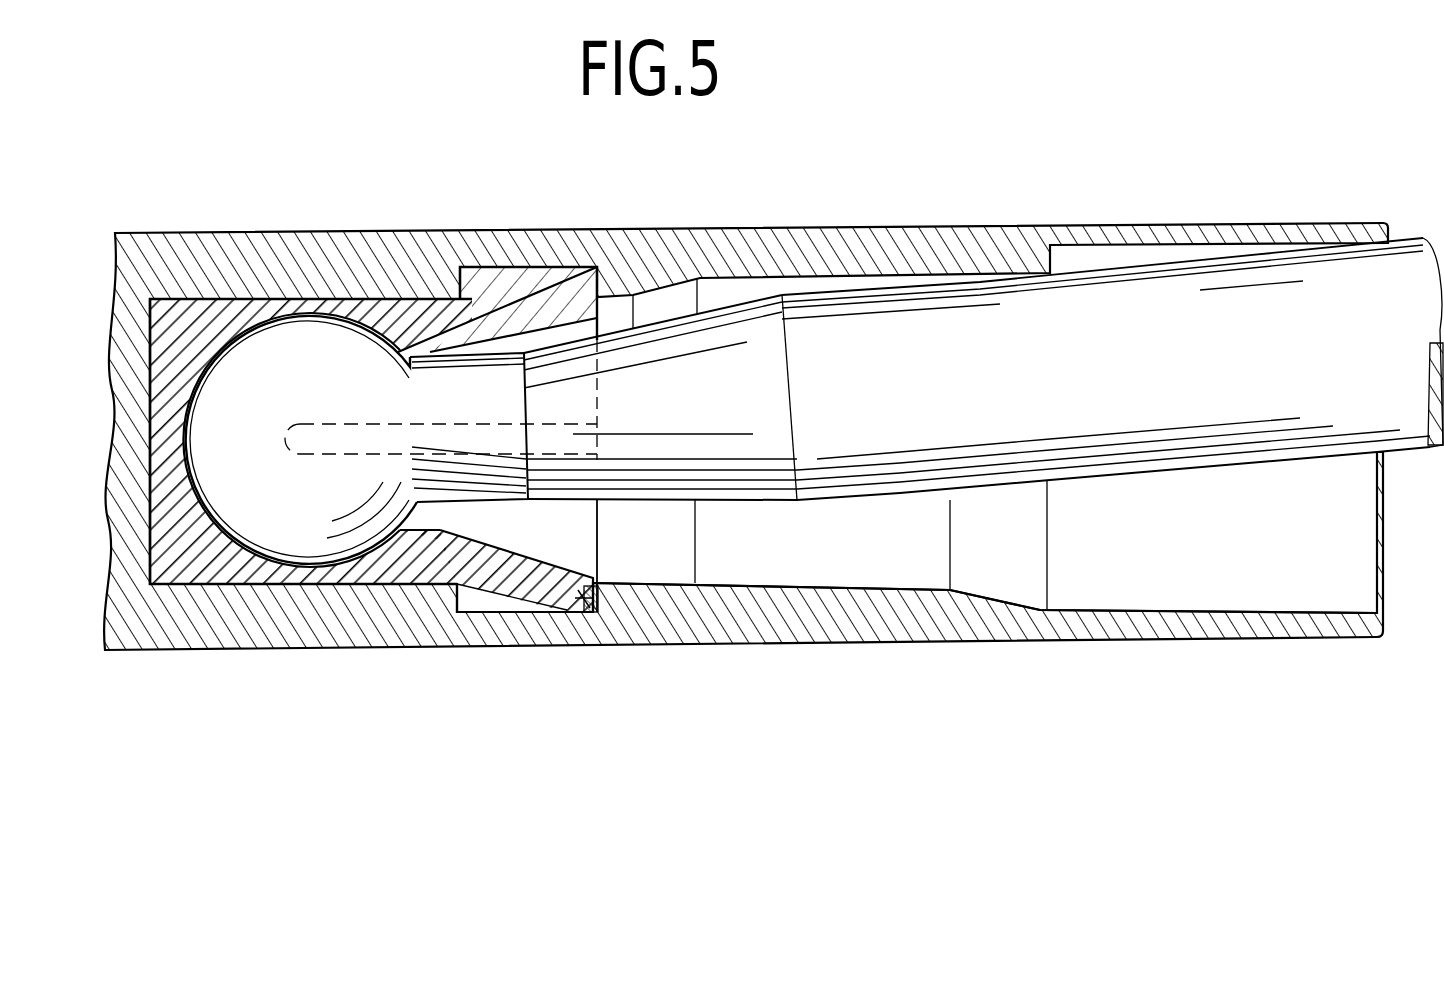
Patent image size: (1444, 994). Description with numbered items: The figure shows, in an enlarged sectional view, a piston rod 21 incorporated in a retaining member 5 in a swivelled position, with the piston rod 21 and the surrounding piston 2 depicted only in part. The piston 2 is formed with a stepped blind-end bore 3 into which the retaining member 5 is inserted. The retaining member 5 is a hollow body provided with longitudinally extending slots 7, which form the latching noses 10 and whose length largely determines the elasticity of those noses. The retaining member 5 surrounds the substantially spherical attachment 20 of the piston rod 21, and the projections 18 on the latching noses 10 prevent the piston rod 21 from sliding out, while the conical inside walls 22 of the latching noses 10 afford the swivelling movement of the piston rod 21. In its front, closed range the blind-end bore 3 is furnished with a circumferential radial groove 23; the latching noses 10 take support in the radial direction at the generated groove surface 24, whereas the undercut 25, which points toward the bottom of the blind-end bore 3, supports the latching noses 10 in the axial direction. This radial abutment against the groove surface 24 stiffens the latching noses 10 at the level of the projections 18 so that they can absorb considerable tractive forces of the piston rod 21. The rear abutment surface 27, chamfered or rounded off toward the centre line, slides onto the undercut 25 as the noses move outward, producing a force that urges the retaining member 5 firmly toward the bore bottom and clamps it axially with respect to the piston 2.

The piston 2 is at (767, 245).
The stepped blind-end bore 3 is at (1160, 598).
The retaining member 5 is at (185, 330).
The slots 7 is at (320, 455).
The latching noses 10 is at (545, 282).
The projections 18 is at (415, 360).
The spherical attachment 20 is at (290, 365).
The piston rod 21 is at (1165, 310).
The conical inside walls 22 is at (537, 318).
The circumferential radial groove 23 is at (490, 600).
The generated groove surface 24 is at (520, 600).
The undercut 25 is at (605, 600).
The rear abutment surface 27 is at (581, 600).